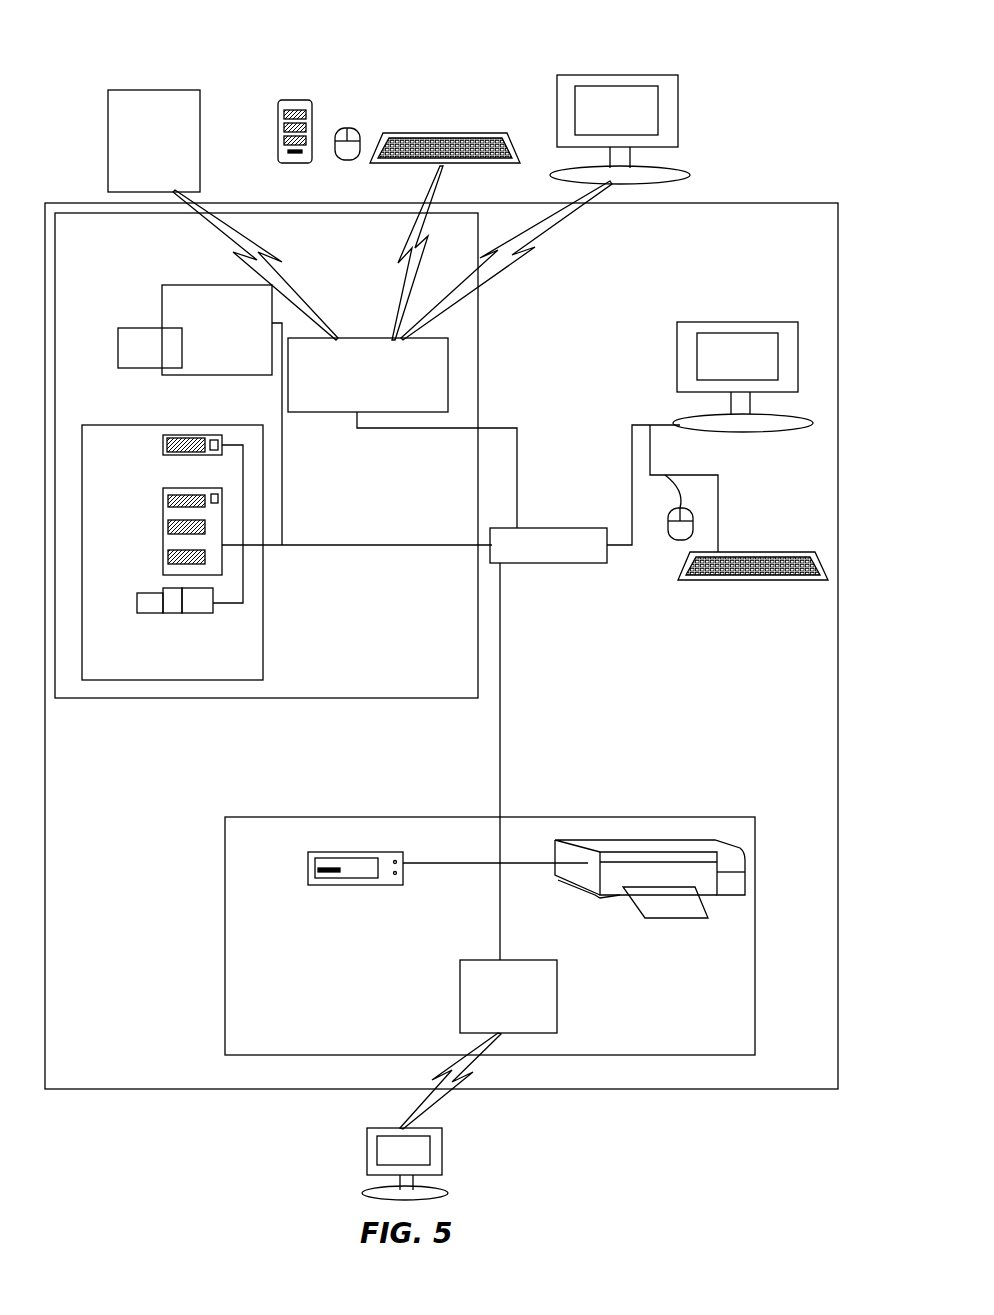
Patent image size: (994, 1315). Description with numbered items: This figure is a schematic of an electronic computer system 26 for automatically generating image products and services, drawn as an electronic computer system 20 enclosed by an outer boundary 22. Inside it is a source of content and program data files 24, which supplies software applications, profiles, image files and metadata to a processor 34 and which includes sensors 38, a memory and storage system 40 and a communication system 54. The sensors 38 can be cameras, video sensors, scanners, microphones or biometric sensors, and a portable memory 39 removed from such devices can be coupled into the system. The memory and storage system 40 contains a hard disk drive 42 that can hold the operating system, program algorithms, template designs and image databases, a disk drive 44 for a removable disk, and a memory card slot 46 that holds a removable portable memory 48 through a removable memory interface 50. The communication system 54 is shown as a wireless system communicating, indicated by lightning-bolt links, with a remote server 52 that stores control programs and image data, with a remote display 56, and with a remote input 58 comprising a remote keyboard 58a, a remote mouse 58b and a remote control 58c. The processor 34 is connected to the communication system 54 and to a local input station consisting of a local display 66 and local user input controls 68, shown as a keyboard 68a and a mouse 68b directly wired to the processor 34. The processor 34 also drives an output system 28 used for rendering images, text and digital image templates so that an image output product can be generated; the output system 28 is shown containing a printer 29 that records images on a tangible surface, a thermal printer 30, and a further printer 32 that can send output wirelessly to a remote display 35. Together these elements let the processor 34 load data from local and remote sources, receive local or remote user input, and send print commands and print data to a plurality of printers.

The electronic computer system 20 is at (113, 1093).
The housing 22 is at (212, 1092).
The source of content and program data files 24 is at (103, 698).
The electronic computer system 26 is at (775, 148).
The output system 28 is at (225, 938).
The printer 29 is at (572, 885).
The thermal printer 30 is at (308, 863).
The printer 32 is at (460, 995).
The processor 34 is at (575, 528).
The remote display device 35 is at (730, 58).
The sensors 38 is at (182, 285).
The portable memory 39 is at (135, 328).
The memory and storage system 40 is at (90, 425).
The hard disk drive 42 is at (163, 533).
The disk drive 44 is at (163, 445).
The memory card slot 46 is at (197, 613).
The removable portable memory 48 is at (145, 613).
The removable memory interface 50 is at (172, 613).
The remote server 52 is at (160, 90).
The communication system 54 is at (303, 412).
The remote display 56 is at (625, 75).
The remote input 58 is at (495, 100).
The remote keyboard 58a is at (445, 133).
The remote mouse 58b is at (349, 128).
The remote control 58c is at (297, 100).
The local display 66 is at (773, 322).
The local user input controls 68 is at (798, 535).
The keyboard 68a is at (748, 552).
The mouse 68b is at (672, 540).